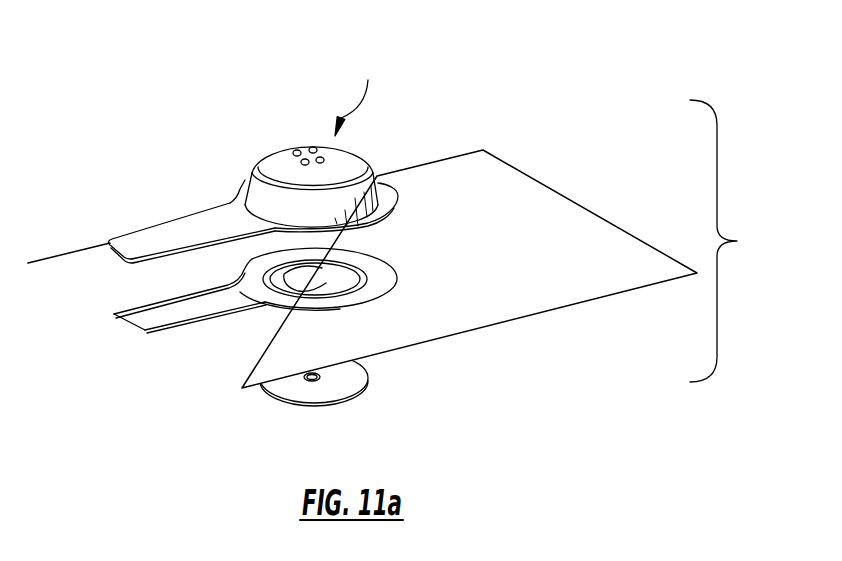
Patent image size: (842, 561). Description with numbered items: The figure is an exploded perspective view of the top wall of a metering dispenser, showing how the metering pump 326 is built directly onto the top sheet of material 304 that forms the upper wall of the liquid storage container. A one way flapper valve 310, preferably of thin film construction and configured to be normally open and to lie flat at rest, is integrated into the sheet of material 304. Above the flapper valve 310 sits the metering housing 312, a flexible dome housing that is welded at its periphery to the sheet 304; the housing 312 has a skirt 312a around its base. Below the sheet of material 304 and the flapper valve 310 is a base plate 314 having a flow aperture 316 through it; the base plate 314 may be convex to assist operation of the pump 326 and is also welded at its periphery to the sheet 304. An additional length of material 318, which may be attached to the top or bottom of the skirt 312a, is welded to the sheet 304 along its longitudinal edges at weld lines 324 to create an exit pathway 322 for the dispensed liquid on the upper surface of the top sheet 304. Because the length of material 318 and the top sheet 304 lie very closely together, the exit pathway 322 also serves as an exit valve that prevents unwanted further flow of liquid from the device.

The top sheet of material 304 is at (458, 168).
The one way flapper valve 310 is at (356, 286).
The metering housing 312 is at (295, 150).
The skirt 312a is at (235, 201).
The base plate 314 is at (293, 391).
The flow aperture 316 is at (318, 380).
The additional length of material 318 is at (136, 238).
The exit pathway 322 is at (193, 312).
The weld lines 324 is at (128, 313).
The metering pump 326 is at (361, 95).